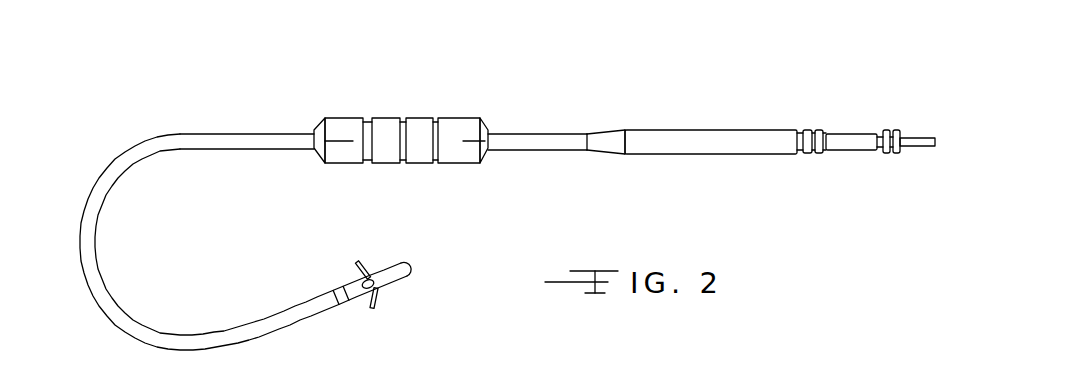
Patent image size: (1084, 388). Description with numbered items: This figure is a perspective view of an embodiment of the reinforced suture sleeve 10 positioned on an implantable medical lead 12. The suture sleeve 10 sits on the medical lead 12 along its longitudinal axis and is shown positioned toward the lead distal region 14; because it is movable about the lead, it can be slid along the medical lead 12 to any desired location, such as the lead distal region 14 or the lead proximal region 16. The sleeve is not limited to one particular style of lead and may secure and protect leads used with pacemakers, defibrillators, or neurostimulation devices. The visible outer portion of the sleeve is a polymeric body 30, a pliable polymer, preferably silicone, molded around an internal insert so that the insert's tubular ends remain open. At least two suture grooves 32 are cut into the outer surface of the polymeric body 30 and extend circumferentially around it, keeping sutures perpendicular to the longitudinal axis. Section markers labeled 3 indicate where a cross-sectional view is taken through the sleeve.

The reinforced suture sleeve 10 is at (401, 114).
The medical lead 12 is at (688, 113).
The lead distal region 14 is at (531, 158).
The lead proximal region 16 is at (935, 153).
The polymeric body 30 is at (455, 128).
The suture grooves 32 is at (404, 124).
The section line for FIG. 3 is at (287, 141).